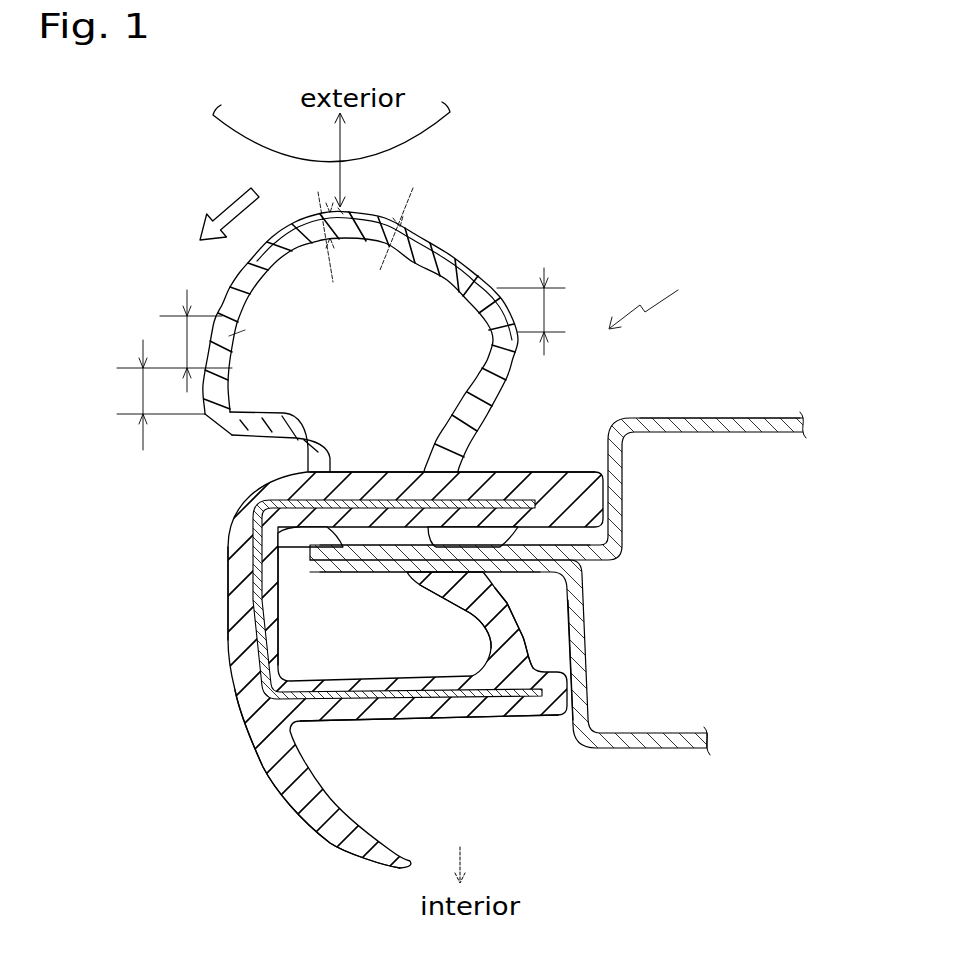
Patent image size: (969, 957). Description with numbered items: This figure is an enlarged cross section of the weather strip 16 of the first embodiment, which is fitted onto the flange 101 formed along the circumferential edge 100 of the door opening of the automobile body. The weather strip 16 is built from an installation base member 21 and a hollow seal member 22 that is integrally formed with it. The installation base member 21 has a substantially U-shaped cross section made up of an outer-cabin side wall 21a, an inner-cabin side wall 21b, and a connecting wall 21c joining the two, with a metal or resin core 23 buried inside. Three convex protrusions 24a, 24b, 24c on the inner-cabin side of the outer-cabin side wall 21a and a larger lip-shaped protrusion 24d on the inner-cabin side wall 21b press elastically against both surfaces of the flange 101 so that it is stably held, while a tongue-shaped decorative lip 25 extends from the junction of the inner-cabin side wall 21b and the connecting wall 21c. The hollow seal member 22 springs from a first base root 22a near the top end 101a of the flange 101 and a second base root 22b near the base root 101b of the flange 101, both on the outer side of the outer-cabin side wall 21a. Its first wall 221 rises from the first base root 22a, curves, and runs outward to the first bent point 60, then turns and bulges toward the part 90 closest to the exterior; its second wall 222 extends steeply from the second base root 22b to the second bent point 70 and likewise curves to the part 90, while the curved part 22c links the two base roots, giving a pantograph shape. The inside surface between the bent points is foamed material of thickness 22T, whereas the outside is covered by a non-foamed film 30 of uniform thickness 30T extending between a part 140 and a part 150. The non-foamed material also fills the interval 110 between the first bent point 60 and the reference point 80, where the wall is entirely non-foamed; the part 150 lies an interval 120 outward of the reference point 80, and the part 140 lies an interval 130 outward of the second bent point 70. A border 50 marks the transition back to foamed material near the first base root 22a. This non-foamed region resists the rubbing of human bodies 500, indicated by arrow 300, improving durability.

The weather strip 16 is at (659, 299).
The installation base member 21 is at (232, 660).
The outer-cabin side wall 21a is at (487, 472).
The inner-cabin side wall 21b is at (355, 727).
The connecting wall 21c is at (230, 587).
The hollow seal member 22 is at (492, 268).
The first base root 22a is at (330, 466).
The second base root 22b is at (512, 395).
The curved part 22c is at (260, 257).
The thickness of the foamed material 22T is at (316, 223).
The core 23 is at (230, 613).
The protrusion 24a is at (603, 560).
The protrusion 24b is at (615, 420).
The protrusion 24c is at (257, 543).
The large protrusion 24d is at (470, 592).
The decorative lip 25 is at (300, 817).
The film 30 is at (466, 258).
The thickness of the film 30T is at (413, 216).
The border 50 is at (220, 424).
The first bent point 60 is at (233, 413).
The second bent point 70 is at (500, 333).
The reference point 80 is at (243, 364).
The part closest to the exterior 90 is at (342, 202).
The circumferential edge 100 is at (625, 527).
The flange 101 is at (450, 700).
The top end of the flange 101a is at (312, 575).
The base root of the flange 101b is at (585, 640).
The interval 110 is at (153, 395).
The interval 120 is at (174, 347).
The interval 130 is at (553, 321).
The part 140 is at (497, 288).
The part 150 is at (217, 313).
The first wall 221 is at (227, 317).
The second wall 222 is at (476, 262).
The arrow 300 is at (222, 216).
The human bodies 500 is at (237, 133).